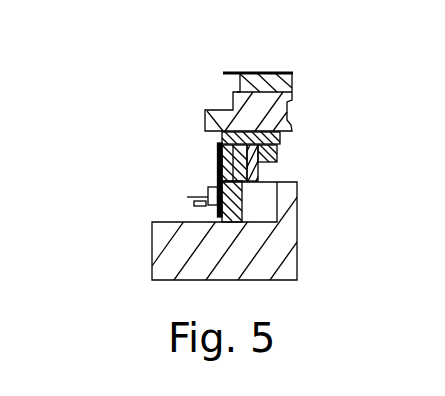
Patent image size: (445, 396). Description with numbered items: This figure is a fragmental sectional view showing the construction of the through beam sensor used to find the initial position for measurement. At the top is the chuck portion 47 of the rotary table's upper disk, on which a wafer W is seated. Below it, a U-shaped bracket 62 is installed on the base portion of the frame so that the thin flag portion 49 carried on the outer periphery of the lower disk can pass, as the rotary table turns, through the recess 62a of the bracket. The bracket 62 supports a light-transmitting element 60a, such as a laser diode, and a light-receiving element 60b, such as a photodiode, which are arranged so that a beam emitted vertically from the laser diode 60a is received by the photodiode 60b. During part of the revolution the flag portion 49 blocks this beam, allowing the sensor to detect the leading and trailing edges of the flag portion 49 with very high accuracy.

The wafer W is at (283, 72).
The chuck portion 47 is at (294, 105).
The light-transmitting element 60a is at (278, 146).
The light-receiving element 60b is at (259, 178).
The U-shaped bracket 62 is at (217, 150).
The recess 62a is at (217, 168).
The flag portion 49 is at (218, 176).